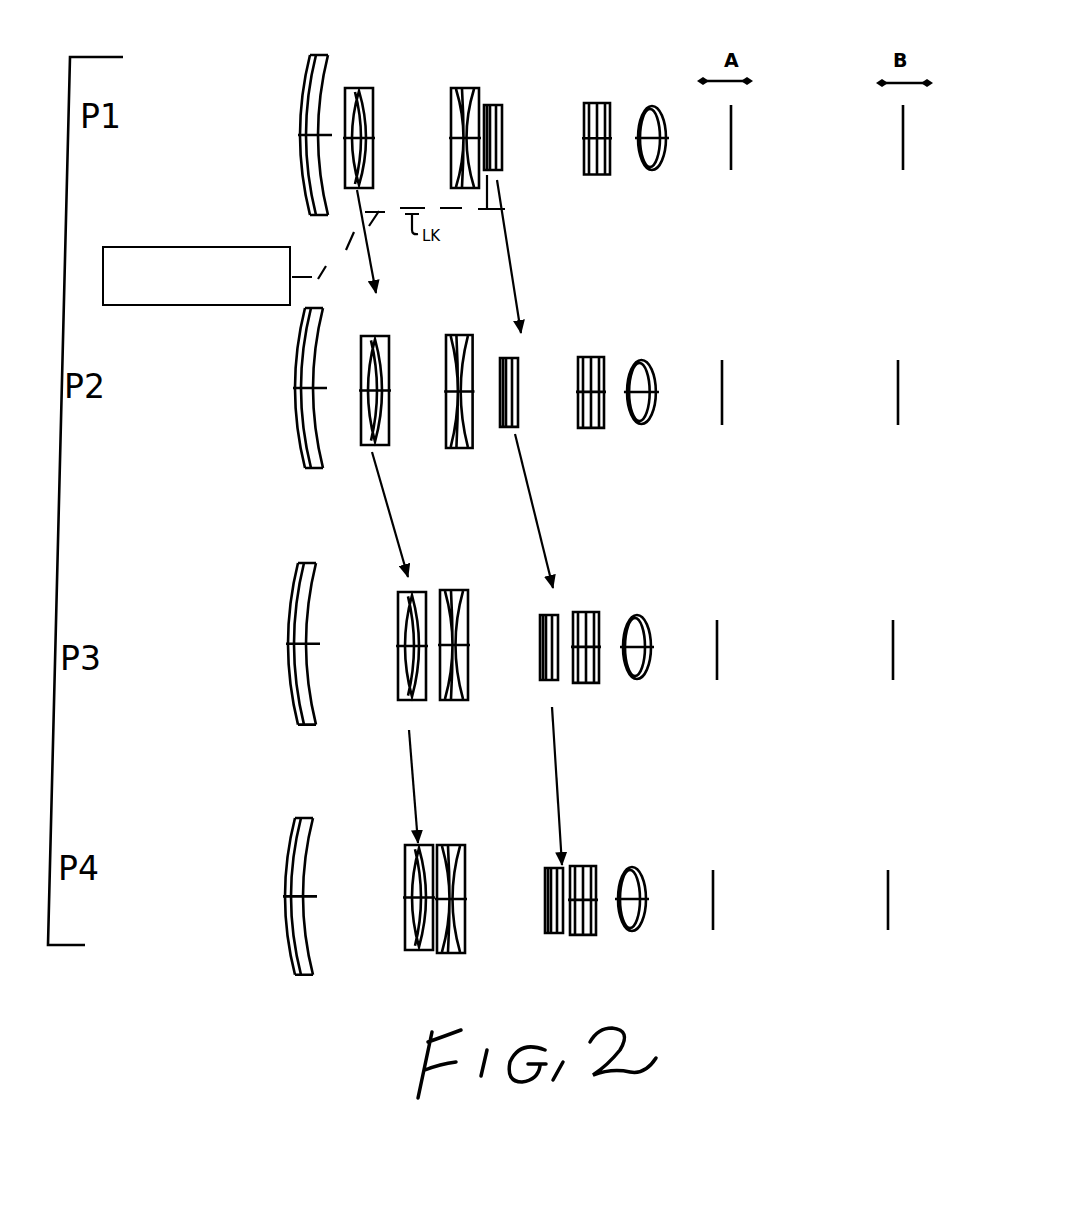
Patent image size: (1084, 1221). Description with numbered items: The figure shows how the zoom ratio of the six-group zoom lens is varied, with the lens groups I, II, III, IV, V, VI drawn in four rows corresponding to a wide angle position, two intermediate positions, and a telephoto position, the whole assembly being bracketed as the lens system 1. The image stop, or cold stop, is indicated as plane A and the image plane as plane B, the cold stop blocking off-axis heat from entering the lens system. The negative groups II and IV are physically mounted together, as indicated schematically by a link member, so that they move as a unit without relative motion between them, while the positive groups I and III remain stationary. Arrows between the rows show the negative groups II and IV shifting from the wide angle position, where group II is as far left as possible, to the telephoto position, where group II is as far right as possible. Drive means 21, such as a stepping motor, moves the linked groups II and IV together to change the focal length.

The zoom lens system 1 is at (76, 281).
The drive means 21 is at (160, 306).
The lens group I is at (332, 40).
The lens group II is at (385, 55).
The lens group III is at (477, 57).
The lens group IV is at (527, 79).
The lens group V is at (617, 81).
The lens group VI is at (683, 81).